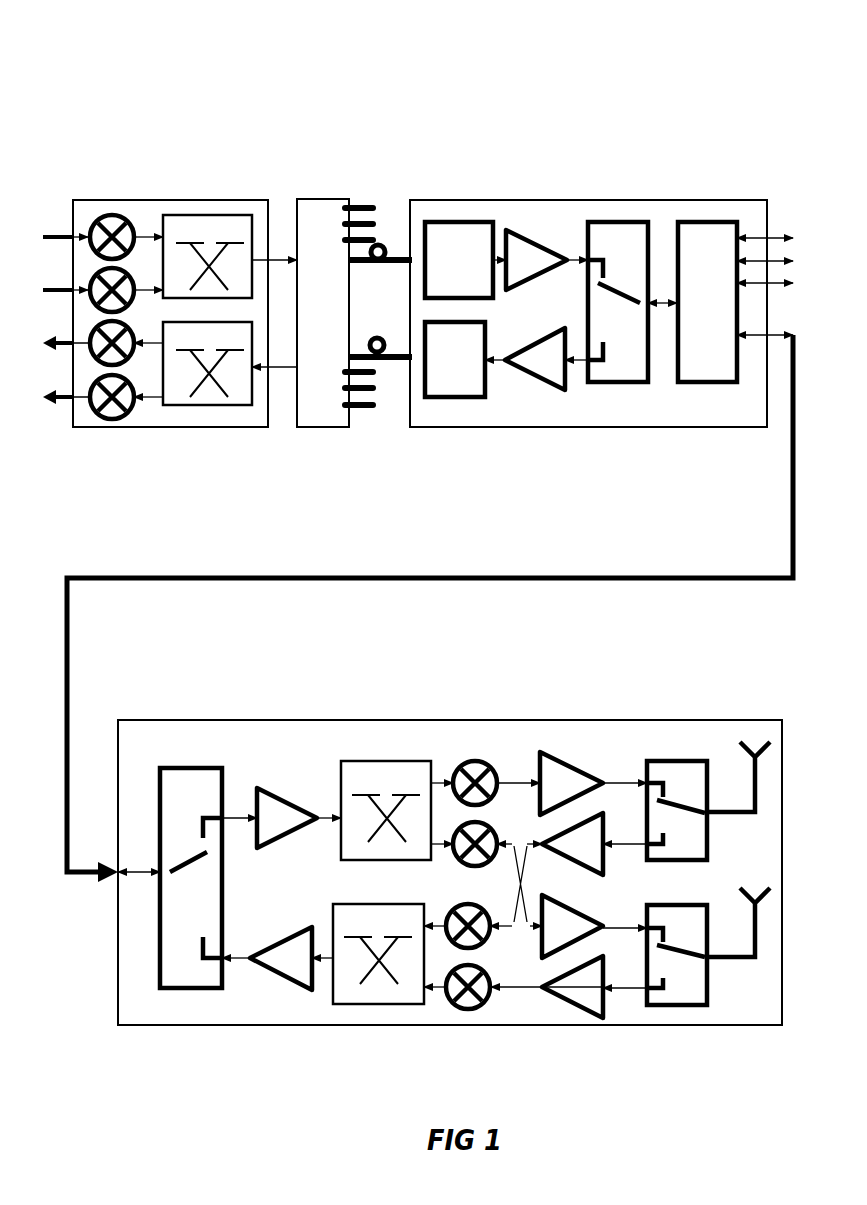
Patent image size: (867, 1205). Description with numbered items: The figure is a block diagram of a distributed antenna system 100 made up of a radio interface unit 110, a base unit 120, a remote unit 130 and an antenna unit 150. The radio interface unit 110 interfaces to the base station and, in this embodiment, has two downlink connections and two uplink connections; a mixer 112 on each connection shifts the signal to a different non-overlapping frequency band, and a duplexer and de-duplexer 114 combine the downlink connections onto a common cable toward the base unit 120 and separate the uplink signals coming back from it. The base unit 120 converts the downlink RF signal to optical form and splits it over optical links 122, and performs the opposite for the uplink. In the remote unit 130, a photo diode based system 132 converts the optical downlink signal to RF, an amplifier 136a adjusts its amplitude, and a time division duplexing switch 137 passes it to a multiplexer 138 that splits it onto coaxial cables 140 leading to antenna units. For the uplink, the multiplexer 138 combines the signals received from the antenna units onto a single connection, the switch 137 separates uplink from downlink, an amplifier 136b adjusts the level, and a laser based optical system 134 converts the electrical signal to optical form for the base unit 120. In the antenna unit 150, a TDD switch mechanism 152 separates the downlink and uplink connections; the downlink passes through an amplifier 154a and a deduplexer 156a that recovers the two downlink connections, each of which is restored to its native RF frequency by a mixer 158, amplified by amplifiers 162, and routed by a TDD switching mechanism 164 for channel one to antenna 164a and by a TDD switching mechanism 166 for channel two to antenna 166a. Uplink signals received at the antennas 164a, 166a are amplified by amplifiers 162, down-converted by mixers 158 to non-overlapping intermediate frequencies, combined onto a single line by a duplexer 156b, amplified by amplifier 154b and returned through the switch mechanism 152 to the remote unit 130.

The distributed antenna system 100 is at (378, 60).
The radio interface unit 110 is at (143, 427).
The mixer 112 is at (112, 217).
The duplexer / de-duplexer 114 is at (240, 220).
The base unit 120 is at (310, 427).
The optical link 122 is at (374, 217).
The remote unit 130 is at (642, 427).
The photo diode based system 132 is at (423, 217).
The laser based optical system 134 is at (437, 398).
The amplifier 136a is at (527, 233).
The amplifier 136b is at (553, 373).
The TDD switch 137 is at (630, 222).
The multiplexer 138 is at (700, 222).
The coaxial cable 140 is at (285, 577).
The antenna unit 150 is at (143, 1025).
The TDD switch mechanism 152 is at (194, 768).
The amplifier 154a is at (283, 795).
The amplifier 154b is at (270, 968).
The deduplexer 156a is at (347, 770).
The duplexer 156b is at (348, 1000).
The mixer 158 is at (502, 780).
The amplifier 162 is at (587, 1013).
The TDD switching mechanism for channel 1 164 is at (647, 761).
The antenna 164a is at (755, 757).
The TDD switching mechanism for channel 2 166 is at (680, 1000).
The antenna 166a is at (753, 960).